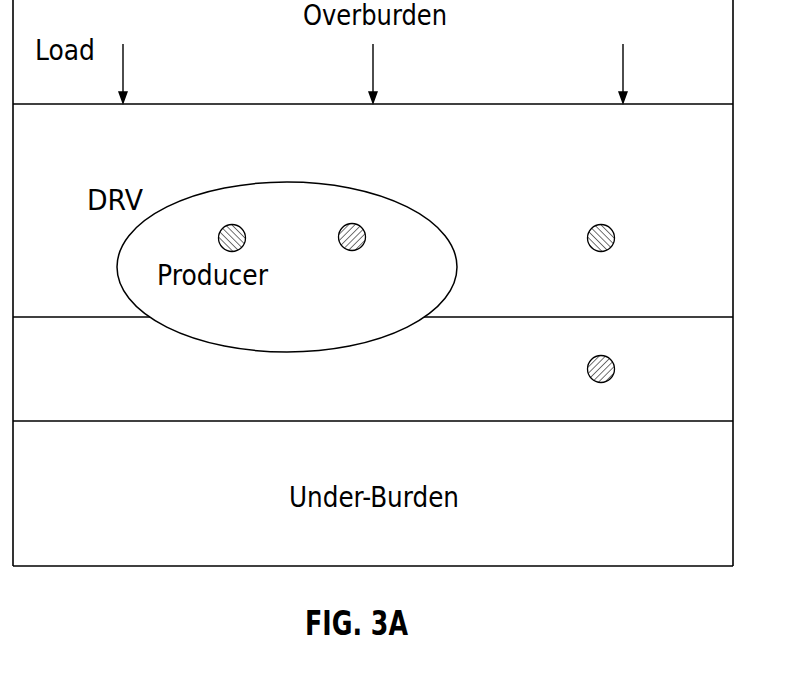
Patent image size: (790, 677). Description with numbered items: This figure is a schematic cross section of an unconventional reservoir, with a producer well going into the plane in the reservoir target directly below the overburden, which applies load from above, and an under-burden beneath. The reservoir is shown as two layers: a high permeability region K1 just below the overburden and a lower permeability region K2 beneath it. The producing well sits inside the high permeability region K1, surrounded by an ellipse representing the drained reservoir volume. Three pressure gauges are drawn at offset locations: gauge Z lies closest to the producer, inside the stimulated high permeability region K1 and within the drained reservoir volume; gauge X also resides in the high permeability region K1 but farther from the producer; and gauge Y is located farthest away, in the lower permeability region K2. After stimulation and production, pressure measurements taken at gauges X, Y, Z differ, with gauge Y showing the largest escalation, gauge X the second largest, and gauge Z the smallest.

The high permeability region K1 is at (373, 210).
The lower permeability region K2 is at (373, 403).
The gauge X is at (601, 256).
The gauge Y is at (601, 384).
The gauge Z is at (353, 256).